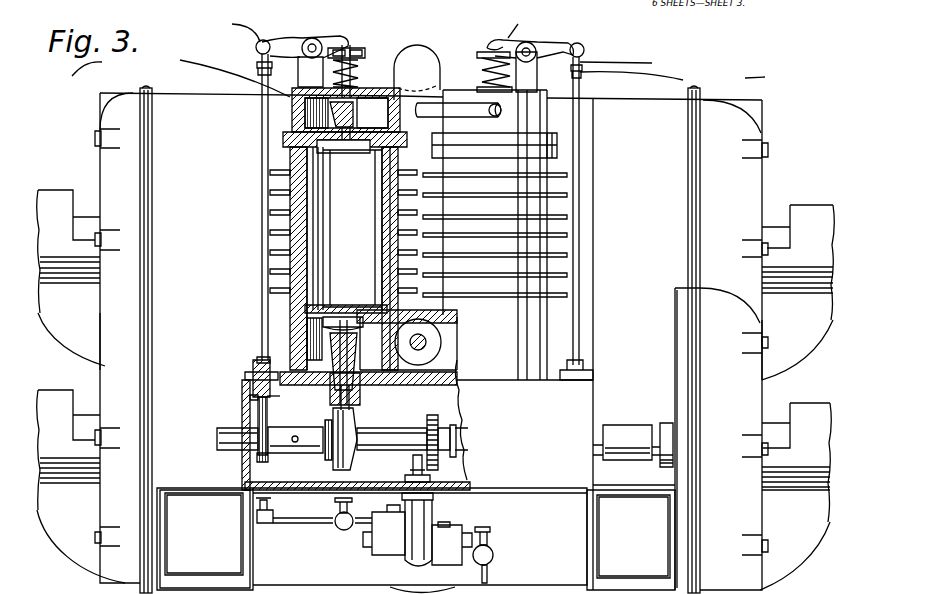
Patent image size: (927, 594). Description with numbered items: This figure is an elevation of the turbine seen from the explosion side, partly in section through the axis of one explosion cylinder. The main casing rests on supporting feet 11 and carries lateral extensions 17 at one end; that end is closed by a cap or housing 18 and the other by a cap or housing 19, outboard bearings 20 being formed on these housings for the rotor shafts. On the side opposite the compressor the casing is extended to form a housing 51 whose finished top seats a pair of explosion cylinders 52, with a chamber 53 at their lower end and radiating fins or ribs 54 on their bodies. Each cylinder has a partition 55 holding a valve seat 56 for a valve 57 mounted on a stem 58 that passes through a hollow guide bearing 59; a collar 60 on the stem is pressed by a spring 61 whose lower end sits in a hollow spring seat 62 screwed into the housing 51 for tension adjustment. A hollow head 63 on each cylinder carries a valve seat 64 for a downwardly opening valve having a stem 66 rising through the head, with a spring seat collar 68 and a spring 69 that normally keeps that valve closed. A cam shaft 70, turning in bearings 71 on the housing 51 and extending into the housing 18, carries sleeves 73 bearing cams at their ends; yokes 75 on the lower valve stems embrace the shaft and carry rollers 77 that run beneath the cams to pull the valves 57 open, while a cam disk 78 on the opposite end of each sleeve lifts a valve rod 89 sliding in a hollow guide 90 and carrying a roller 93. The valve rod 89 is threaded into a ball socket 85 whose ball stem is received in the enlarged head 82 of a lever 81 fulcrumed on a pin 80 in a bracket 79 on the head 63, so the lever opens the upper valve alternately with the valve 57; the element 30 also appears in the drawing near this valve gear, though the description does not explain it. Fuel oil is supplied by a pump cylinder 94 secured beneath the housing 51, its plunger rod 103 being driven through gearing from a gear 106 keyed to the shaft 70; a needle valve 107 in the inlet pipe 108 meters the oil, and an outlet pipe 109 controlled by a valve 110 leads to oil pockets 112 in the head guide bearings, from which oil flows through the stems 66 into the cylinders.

The supporting feet 11 is at (180, 582).
The lateral extensions 17 is at (683, 370).
The cap or housing 18 is at (770, 387).
The cap or housing 19 is at (115, 360).
The outboard bearings 20 is at (70, 200).
The rocker arm 30 is at (432, 45).
The housing 51 is at (258, 395).
The explosion cylinders 52 is at (275, 203).
The chamber 53 is at (445, 355).
The radiating fins or ribs 54 is at (278, 235).
The partitions 55 is at (305, 310).
The valve seat 56 is at (375, 278).
The valve 57 is at (325, 322).
The stem 58 is at (335, 400).
The hollow guide bearing 59 is at (330, 348).
The collar 60 is at (255, 372).
The spring 61 is at (363, 385).
The hollow spring seat 62 is at (352, 412).
The hollow head 63 is at (290, 97).
The valve seat 64 is at (290, 137).
The stem 66 is at (372, 58).
The spring seat collar 68 is at (350, 50).
The spring 69 is at (477, 88).
The cam shaft 70 is at (398, 443).
The bearings 71 is at (255, 440).
The sleeves 73 is at (327, 450).
The yokes 75 is at (262, 412).
The rollers 77 is at (302, 523).
The cam disk 78 is at (243, 490).
The bracket 79 is at (256, 46).
The pin 80 is at (305, 43).
The lever 81 is at (318, 30).
The enlarged head 82 is at (437, 44).
The ball socket 85 is at (455, 76).
The valve rod 89 is at (262, 162).
The hollow guide 90 is at (245, 375).
The roller 93 is at (262, 397).
The pump cylinder 94 is at (445, 524).
The rod 103 is at (458, 458).
The gear 106 is at (458, 433).
The needle valve 107 is at (495, 548).
The inlet pipe 108 is at (497, 565).
The pipe 109 is at (265, 522).
The valve 110 is at (345, 530).
The oil pockets 112 is at (290, 110).